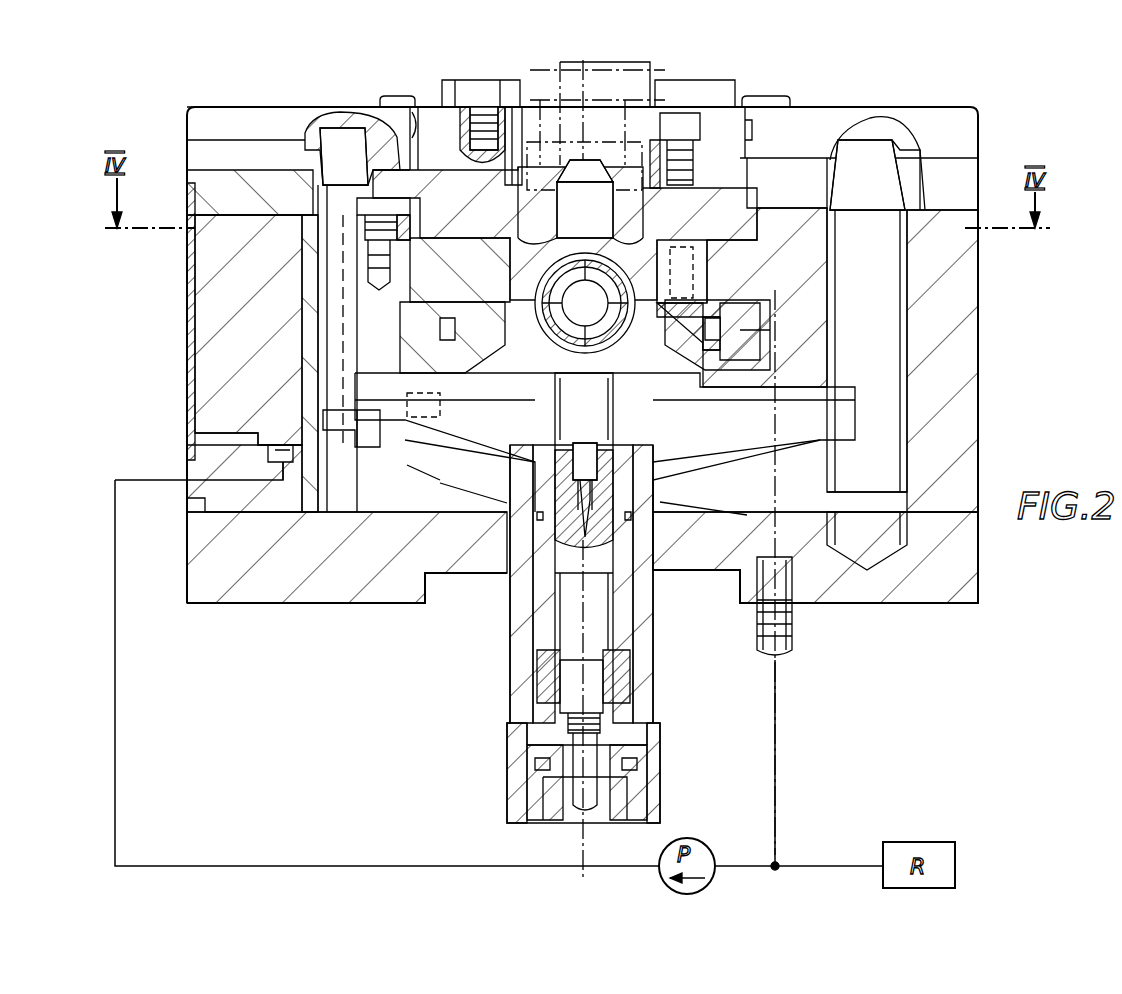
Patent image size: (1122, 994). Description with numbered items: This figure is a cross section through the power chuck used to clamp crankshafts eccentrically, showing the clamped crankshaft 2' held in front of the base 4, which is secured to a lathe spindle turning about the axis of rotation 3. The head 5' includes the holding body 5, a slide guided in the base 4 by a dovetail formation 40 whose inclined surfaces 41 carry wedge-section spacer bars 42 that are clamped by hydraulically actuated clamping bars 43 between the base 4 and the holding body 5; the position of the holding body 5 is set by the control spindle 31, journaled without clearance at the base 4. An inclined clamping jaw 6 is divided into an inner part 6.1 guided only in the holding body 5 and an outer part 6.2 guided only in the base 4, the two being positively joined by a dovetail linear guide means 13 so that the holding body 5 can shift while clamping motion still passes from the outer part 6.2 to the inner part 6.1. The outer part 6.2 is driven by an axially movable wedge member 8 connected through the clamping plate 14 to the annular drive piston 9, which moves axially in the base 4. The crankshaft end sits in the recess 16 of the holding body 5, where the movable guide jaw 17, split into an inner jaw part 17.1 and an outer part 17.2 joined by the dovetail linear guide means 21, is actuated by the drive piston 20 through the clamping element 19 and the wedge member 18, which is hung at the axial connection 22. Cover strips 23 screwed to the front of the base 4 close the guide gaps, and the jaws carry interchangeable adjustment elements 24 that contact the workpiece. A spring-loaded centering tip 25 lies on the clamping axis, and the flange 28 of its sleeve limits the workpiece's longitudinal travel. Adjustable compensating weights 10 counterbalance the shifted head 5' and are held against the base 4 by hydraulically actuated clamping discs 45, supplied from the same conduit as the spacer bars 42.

The clamped crankshaft 2' is at (593, 162).
The axis of rotation 3 is at (585, 118).
The base 4 is at (205, 585).
The holding body 5 is at (600, 277).
The head 5' is at (619, 68).
The inclined clamping jaw 6 is at (800, 105).
The inner clamping jaw part 6.1 is at (740, 178).
The outer clamping jaw part 6.2 is at (950, 118).
The wedge member 8 is at (900, 335).
The drive piston 9 is at (480, 490).
The compensating weight 10 is at (248, 330).
The linear guide means 13 is at (755, 135).
The clamping plate 14 is at (813, 425).
The recess 16 is at (523, 100).
The movable guide jaw 17 is at (368, 108).
The inner jaw part 17.1 is at (450, 180).
The outer jaw part 17.2 is at (205, 120).
The wedge member 18 is at (335, 345).
The clamping plate or element 19 is at (440, 425).
The drive piston 20 is at (545, 650).
The linear guide means 21 is at (420, 128).
The axial connection 22 is at (375, 400).
The cover strip 23 is at (390, 96).
The adjustment element 24 is at (450, 92).
The centering tip 25 is at (585, 185).
The flange 28 is at (545, 170).
The control spindle 31 is at (570, 300).
The dovetail formation 40 is at (640, 360).
The inclined surface 41 is at (495, 340).
The spacer bar 42 is at (692, 302).
The clamping bar 43 is at (740, 325).
The clamping disc 45 is at (270, 455).